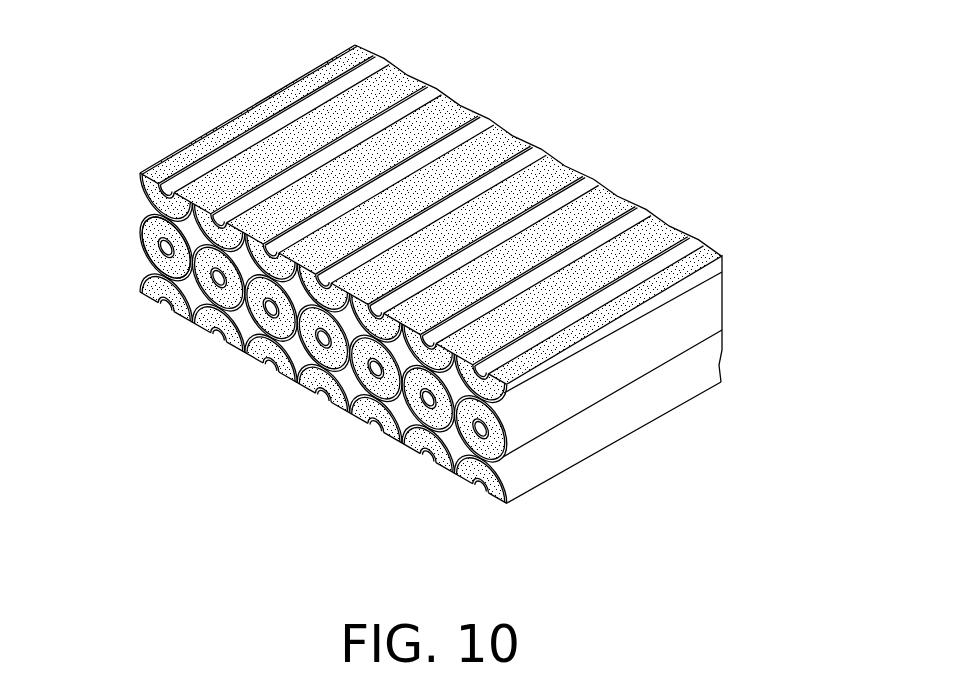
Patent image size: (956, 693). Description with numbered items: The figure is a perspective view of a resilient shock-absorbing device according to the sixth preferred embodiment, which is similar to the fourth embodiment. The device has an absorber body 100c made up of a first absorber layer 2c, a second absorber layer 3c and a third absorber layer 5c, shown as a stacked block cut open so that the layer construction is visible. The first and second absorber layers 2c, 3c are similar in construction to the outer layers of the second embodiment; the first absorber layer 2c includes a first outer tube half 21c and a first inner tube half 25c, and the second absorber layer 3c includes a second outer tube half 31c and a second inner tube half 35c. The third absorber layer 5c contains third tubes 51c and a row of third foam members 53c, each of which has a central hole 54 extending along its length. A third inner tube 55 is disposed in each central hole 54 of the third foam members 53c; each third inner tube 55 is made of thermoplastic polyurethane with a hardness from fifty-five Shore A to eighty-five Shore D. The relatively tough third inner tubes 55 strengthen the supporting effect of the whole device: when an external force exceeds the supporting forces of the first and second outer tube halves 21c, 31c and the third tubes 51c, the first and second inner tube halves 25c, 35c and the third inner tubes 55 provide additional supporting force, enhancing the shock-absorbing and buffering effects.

The absorber body 100c is at (540, 130).
The first absorber layer 2c is at (703, 236).
The second absorber layer 3c is at (460, 482).
The third absorber layer 5c is at (615, 392).
The first outer tube half 21c is at (512, 388).
The first inner tube half 25c is at (297, 107).
The second outer tube half 31c is at (363, 423).
The second inner tube half 35c is at (327, 398).
The third tube 51c is at (143, 222).
The third foam member 53c is at (142, 233).
The central hole 54 is at (162, 248).
The third inner tube 55 is at (145, 263).